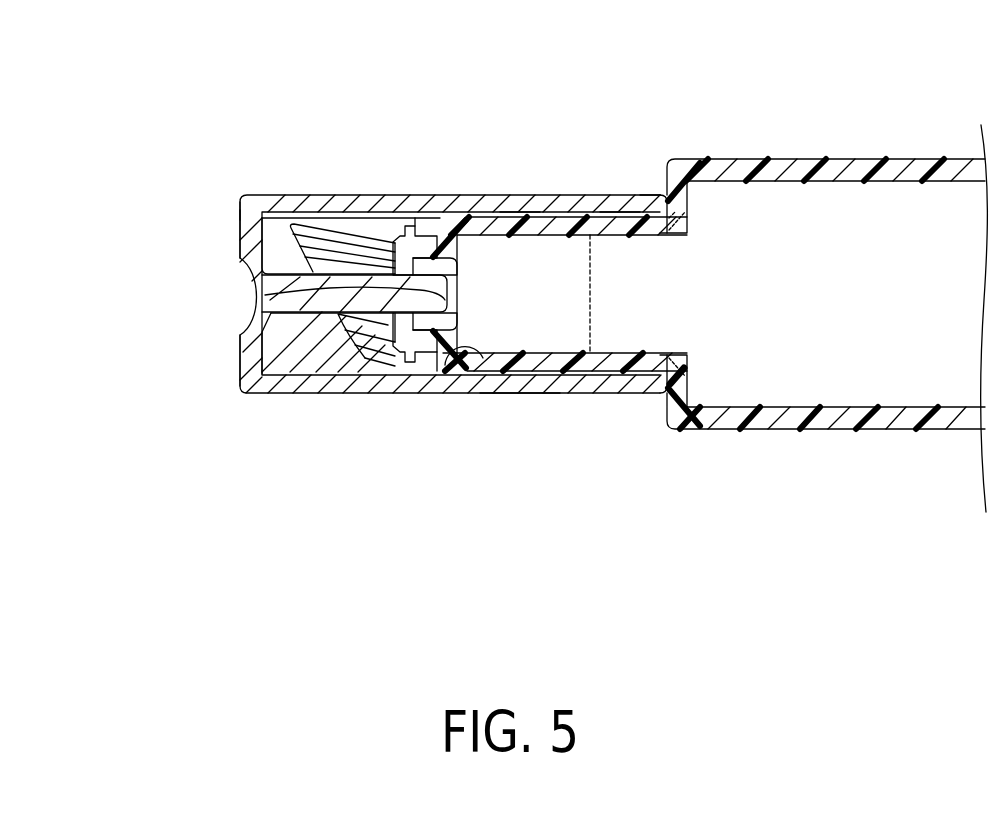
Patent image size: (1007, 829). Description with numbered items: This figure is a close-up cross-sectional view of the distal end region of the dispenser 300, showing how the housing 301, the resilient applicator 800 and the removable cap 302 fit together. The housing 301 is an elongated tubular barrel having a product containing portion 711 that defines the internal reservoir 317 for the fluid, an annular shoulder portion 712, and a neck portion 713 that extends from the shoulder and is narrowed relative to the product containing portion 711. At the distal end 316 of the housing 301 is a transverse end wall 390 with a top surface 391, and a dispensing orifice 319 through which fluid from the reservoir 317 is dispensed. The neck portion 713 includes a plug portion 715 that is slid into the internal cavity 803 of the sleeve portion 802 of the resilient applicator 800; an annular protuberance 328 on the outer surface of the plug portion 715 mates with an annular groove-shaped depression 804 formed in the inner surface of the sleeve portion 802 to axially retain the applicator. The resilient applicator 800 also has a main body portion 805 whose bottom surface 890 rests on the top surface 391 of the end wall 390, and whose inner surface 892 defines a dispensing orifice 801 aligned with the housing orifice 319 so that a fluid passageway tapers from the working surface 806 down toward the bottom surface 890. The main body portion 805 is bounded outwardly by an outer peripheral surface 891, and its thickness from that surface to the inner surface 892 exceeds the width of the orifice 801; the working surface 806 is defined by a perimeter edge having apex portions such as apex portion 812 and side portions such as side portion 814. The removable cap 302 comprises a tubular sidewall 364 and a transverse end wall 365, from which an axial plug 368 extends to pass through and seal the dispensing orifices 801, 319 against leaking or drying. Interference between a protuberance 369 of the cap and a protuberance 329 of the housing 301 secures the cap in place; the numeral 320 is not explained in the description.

The dispenser 300 is at (188, 150).
The housing 301 is at (864, 142).
The removable cap 302 is at (487, 178).
The distal end 316 is at (330, 365).
The internal reservoir 317 is at (848, 305).
The dispensing orifice 319 is at (352, 238).
The lower retaining lip 320 is at (470, 345).
The protuberance 328 is at (372, 348).
The protuberance 329 is at (608, 212).
The tubular sidewall 364 is at (520, 395).
The transverse end wall 365 is at (243, 343).
The axial plug 368 is at (241, 233).
The protuberance 369 is at (650, 205).
The transverse end wall 390 is at (270, 304).
The top surface 391 is at (300, 388).
The product containing portion 711 is at (782, 158).
The annular shoulder portion 712 is at (680, 408).
The neck portion 713 is at (552, 218).
The plug portion 715 is at (425, 218).
The resilient applicator 800 is at (364, 205).
The dispensing orifice 801 is at (268, 374).
The sleeve portion 802 is at (418, 360).
The internal cavity 803 is at (446, 352).
The depression 804 is at (416, 215).
The main body portion 805 is at (303, 232).
The working surface 806 is at (292, 384).
The apex portion 812 is at (350, 375).
The side portion 814 is at (290, 274).
The bottom surface 890 is at (517, 213).
The outer peripheral surface 891 is at (332, 245).
The inner surface 892 is at (268, 298).